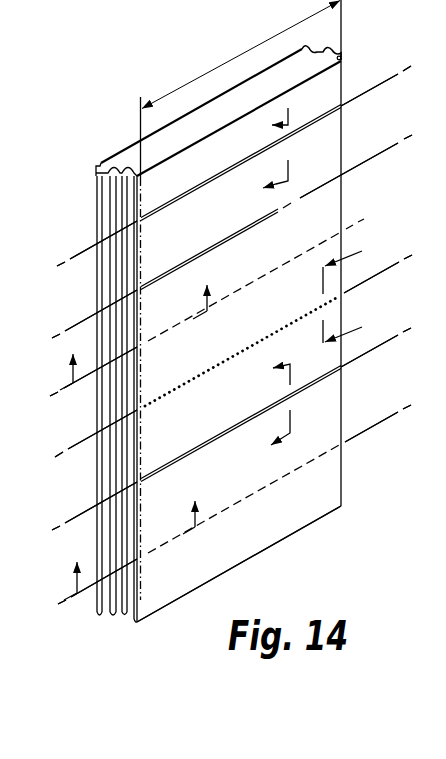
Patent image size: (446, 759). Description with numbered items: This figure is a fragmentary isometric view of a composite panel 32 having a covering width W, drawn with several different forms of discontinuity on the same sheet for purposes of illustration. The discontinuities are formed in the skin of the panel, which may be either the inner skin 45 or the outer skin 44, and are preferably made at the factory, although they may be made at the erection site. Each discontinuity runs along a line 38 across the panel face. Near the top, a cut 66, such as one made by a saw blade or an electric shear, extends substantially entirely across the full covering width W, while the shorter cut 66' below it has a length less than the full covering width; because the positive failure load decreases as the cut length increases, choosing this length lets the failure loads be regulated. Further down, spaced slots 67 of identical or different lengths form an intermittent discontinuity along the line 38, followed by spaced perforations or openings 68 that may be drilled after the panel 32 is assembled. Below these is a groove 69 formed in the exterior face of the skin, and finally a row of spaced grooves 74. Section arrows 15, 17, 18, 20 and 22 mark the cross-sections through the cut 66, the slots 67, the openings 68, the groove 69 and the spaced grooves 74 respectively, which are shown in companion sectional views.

The section line 15 is at (259, 163).
The section line 17 is at (141, 323).
The section line 18 is at (356, 288).
The section line 20 is at (261, 415).
The section line 22 is at (131, 534).
The composite panel 32 is at (95, 153).
The line 38 is at (383, 152).
The outer skin 44 is at (273, 564).
The inner skin 45 is at (318, 497).
The cut 66 is at (234, 166).
The cut 66' is at (232, 236).
The spaced slots 67 is at (303, 251).
The spaced perforations or openings 68 is at (313, 313).
The groove 69 is at (221, 432).
The spaced grooves 74 is at (293, 480).
The covering width W is at (248, 52).